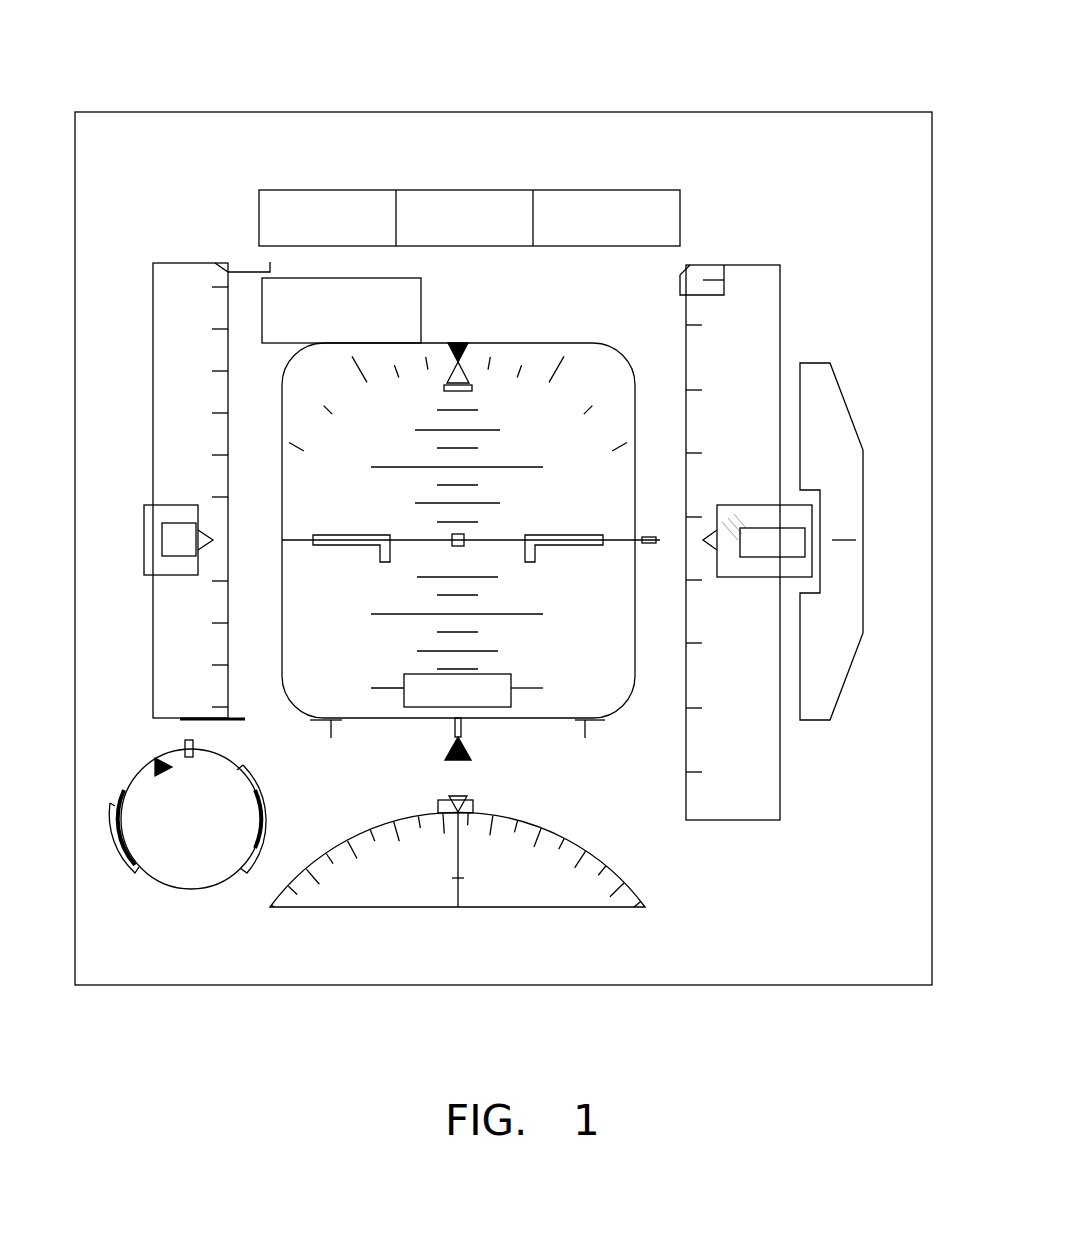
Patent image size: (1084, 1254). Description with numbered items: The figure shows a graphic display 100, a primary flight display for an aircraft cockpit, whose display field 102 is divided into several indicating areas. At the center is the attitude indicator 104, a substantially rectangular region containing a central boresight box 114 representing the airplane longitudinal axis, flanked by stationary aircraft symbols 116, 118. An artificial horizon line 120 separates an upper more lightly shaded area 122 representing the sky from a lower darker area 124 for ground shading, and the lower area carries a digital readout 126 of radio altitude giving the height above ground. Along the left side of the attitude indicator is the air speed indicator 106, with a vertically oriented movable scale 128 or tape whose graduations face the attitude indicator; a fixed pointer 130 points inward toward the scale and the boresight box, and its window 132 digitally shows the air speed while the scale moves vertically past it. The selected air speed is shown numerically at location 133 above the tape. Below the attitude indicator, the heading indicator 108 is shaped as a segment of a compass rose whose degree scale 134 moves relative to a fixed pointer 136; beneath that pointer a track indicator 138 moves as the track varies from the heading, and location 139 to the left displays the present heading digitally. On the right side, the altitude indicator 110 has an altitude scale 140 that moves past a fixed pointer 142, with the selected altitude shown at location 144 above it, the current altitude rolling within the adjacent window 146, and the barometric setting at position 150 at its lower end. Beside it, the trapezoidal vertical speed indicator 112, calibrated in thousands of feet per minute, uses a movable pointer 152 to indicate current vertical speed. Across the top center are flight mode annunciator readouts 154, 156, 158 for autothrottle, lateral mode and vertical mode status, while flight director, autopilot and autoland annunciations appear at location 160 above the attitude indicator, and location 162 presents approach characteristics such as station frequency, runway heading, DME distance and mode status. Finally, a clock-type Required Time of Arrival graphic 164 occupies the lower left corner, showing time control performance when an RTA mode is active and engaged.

The graphic display 100 is at (710, 62).
The display field 102 is at (263, 148).
The attitude indicator 104 is at (526, 343).
The air speed indicator 106 is at (153, 322).
The heading indicator 108 is at (392, 825).
The altitude indicator 110 is at (780, 300).
The vertical speed indicator 112 is at (823, 722).
The boresight box 114 is at (452, 538).
The aircraft symbol 116 is at (345, 535).
The aircraft symbol 118 is at (555, 535).
The line 120 is at (402, 548).
The upper more lightly shaded area 122 is at (543, 423).
The lower darker area 124 is at (612, 618).
The digital readout 126 is at (507, 674).
The movable scale 128 is at (215, 393).
The fixed pointer 130 is at (150, 505).
The window 132 is at (178, 548).
The location 133 is at (182, 238).
The scale 134 is at (598, 870).
The fixed pointer 136 is at (462, 795).
The track indicator 138 is at (462, 890).
The location 139 is at (408, 908).
The altitude scale 140 is at (690, 780).
The fixed pointer 142 is at (712, 540).
The location 144 is at (781, 238).
The window 146 is at (766, 525).
The position 150 is at (758, 876).
The movable pointer 152 is at (853, 542).
The flight mode annunciator readout 154 is at (305, 190).
The flight mode annunciator readout 156 is at (420, 190).
The flight mode annunciator readout 158 is at (562, 190).
The location 160 is at (493, 322).
The location 162 is at (416, 282).
The Required Time of Arrival graphic 164 is at (105, 765).